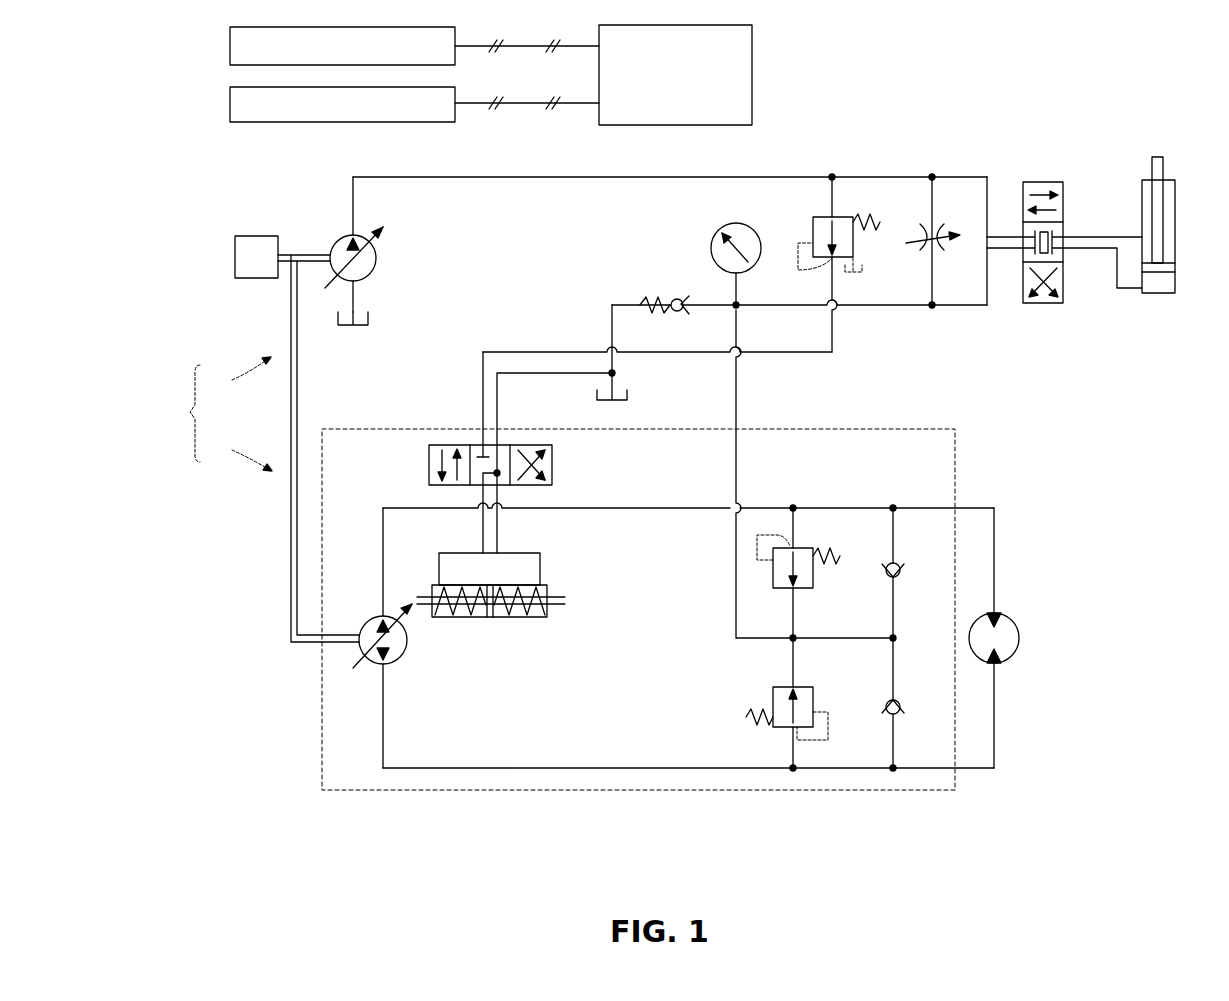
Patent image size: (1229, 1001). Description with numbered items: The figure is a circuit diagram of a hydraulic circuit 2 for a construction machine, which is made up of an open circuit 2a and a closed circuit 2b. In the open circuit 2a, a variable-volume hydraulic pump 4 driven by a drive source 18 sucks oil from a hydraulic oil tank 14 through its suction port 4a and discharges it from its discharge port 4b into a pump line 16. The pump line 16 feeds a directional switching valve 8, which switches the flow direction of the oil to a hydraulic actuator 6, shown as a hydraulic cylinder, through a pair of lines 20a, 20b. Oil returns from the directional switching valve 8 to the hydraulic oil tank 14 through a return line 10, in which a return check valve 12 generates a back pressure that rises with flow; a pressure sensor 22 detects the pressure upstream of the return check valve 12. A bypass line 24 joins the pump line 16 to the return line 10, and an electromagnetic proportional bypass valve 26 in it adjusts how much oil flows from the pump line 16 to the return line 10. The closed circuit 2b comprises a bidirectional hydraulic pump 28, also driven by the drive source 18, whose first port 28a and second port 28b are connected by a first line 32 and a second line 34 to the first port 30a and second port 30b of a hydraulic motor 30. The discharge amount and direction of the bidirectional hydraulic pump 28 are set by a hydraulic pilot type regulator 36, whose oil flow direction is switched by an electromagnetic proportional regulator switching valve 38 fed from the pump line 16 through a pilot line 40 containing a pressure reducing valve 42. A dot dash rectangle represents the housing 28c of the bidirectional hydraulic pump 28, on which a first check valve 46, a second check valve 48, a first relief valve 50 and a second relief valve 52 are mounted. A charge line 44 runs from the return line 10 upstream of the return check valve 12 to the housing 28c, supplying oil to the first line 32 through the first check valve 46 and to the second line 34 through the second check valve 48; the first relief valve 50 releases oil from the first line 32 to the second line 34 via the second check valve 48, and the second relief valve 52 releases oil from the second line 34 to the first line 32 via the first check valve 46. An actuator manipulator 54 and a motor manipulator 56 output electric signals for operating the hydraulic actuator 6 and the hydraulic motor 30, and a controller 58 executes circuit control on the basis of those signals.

The hydraulic circuit 2 is at (190, 412).
The open circuit 2a is at (237, 372).
The closed circuit 2b is at (238, 454).
The hydraulic pump 4 is at (372, 244).
The suction port 4a is at (356, 283).
The discharge port 4b is at (360, 236).
The hydraulic actuator 6 is at (1177, 194).
The directional switching valve 8 is at (1043, 305).
The return line 10 is at (762, 307).
The return check valve 12 is at (680, 297).
The hydraulic oil tank 14 is at (362, 326).
The pump line 16 is at (557, 180).
The drive source 18 is at (257, 235).
The line 20a is at (1095, 235).
The line 20b is at (1090, 250).
The pressure sensor 22 is at (738, 224).
The bypass line 24 is at (934, 198).
The bypass valve 26 is at (926, 247).
The bidirectional hydraulic pump 28 is at (666, 625).
The first port 28a is at (378, 619).
The second port 28b is at (379, 665).
The housing 28c is at (362, 793).
The hydraulic motor 30 is at (1027, 638).
The first port 30a is at (1001, 619).
The second port 30b is at (1001, 659).
The first line 32 is at (655, 511).
The second line 34 is at (655, 766).
The regulator 36 is at (532, 619).
The regulator switching valve 38 is at (554, 466).
The pilot line 40 is at (770, 354).
The pressure reducing valve 42 is at (816, 216).
The charge line 44 is at (739, 466).
The first check valve 46 is at (900, 565).
The second check valve 48 is at (900, 712).
The first relief valve 50 is at (811, 590).
The second relief valve 52 is at (774, 688).
The actuator manipulator 54 is at (228, 47).
The motor manipulator 56 is at (228, 105).
The controller 58 is at (754, 73).